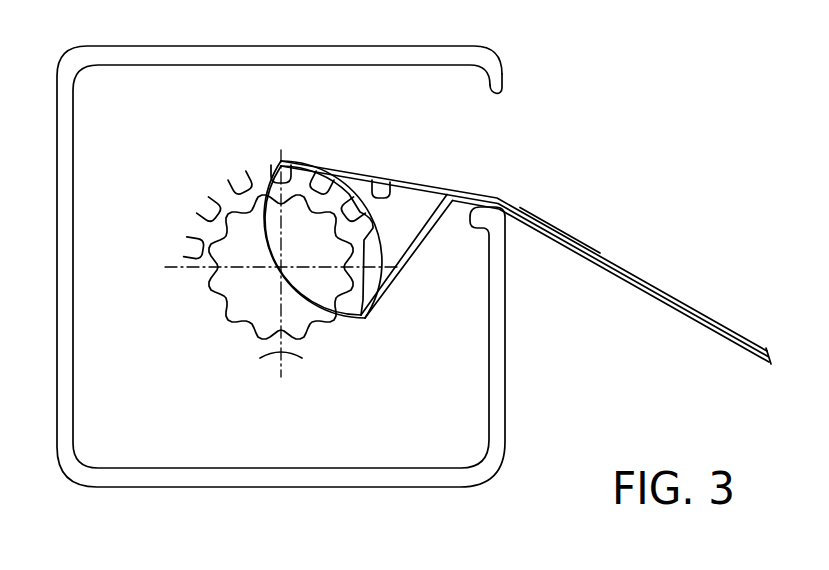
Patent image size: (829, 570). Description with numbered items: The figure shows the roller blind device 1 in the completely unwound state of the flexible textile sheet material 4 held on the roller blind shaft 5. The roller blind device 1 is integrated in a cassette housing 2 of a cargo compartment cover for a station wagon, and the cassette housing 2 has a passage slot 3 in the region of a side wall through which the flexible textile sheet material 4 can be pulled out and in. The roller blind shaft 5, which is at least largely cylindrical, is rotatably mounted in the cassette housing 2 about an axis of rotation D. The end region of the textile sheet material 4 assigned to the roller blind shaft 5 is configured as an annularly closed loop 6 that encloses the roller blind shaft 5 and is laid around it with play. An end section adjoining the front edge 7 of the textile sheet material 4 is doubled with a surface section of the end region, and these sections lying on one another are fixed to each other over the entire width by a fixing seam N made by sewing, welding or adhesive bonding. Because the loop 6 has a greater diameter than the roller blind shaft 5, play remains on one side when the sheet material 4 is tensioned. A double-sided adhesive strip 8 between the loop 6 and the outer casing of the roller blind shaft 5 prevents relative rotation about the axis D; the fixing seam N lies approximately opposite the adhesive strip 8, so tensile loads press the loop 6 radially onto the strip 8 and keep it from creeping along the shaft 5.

The roller blind device 1 is at (565, 158).
The cassette housing 2 is at (224, 488).
The passage slot 3 is at (500, 94).
The flexible textile sheet material 4 is at (715, 320).
The roller blind shaft 5 is at (213, 312).
The loop 6 is at (401, 250).
The front edge 7 is at (646, 292).
The adhesive strip 8 is at (302, 361).
The axis of rotation D is at (282, 267).
The fixing seam N is at (573, 250).